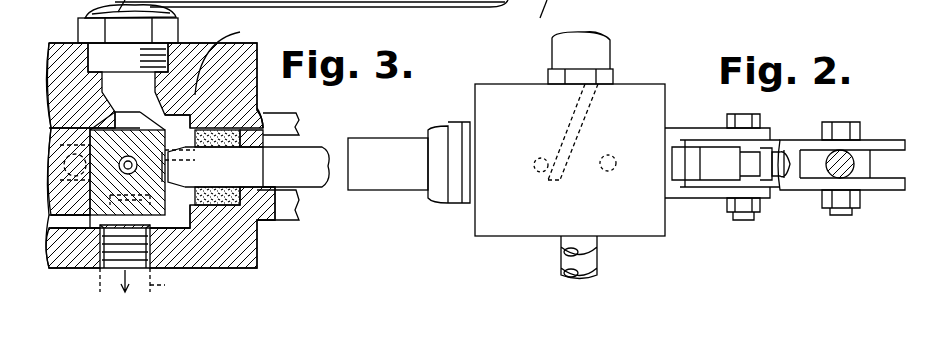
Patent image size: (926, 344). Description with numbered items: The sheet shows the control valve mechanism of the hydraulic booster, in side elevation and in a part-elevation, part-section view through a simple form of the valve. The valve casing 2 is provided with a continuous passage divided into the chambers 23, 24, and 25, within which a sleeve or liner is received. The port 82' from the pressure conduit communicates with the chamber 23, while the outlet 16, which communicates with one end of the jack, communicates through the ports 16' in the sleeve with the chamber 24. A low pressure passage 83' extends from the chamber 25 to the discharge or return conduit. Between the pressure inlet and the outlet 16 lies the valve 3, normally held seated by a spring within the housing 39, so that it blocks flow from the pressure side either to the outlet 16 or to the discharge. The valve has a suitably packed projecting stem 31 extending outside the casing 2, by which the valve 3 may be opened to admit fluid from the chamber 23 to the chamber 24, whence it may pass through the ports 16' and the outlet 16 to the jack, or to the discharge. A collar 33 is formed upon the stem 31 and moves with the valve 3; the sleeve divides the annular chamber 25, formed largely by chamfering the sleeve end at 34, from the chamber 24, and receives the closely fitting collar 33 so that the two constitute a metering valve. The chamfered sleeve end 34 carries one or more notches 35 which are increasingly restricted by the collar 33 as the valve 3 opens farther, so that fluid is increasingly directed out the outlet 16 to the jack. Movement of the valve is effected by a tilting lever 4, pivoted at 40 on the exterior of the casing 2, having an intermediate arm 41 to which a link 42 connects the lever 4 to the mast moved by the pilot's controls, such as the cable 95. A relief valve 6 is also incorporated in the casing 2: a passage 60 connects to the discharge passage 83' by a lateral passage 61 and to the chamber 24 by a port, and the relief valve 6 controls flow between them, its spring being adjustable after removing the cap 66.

In FIG. 3, the valve casing 2 is at (170, 97).
In FIG. 2, the valve casing 2 is at (480, 97).
In FIG. 3, the valve 3 is at (96, 150).
In FIG. 2, the tilting lever 4 is at (772, 146).
In FIG. 3, the relief valve 6 is at (222, 56).
In FIG. 3, the outlet 16 is at (145, 261).
In FIG. 2, the outlet 16 is at (546, 257).
In FIG. 3, the ports 16' is at (55, 243).
In FIG. 2, the ports 16' is at (616, 265).
In FIG. 3, the chamber 23 is at (56, 206).
In FIG. 3, the chamber 24 is at (116, 120).
In FIG. 3, the chamber 25 is at (180, 212).
In FIG. 3, the stem 31 is at (306, 150).
In FIG. 2, the stem 31 is at (690, 168).
In FIG. 3, the collar 33 is at (198, 195).
In FIG. 3, the chamfered sleeve end 34 is at (259, 82).
In FIG. 3, the notches 35 is at (262, 130).
In FIG. 2, the housing 39 is at (384, 182).
In FIG. 2, the pivot 40 is at (750, 220).
In FIG. 2, the intermediate arm 41 is at (876, 143).
In FIG. 2, the link 42 is at (850, 174).
In FIG. 2, the passage 60 is at (566, 116).
In FIG. 2, the lateral passage 61 is at (548, 136).
In FIG. 2, the cap 66 is at (604, 53).
In FIG. 3, the port 82' is at (43, 169).
In FIG. 2, the port 82' is at (556, 187).
In FIG. 2, the low pressure passage 83' is at (624, 146).
In FIG. 2, the cables 95 is at (531, 18).